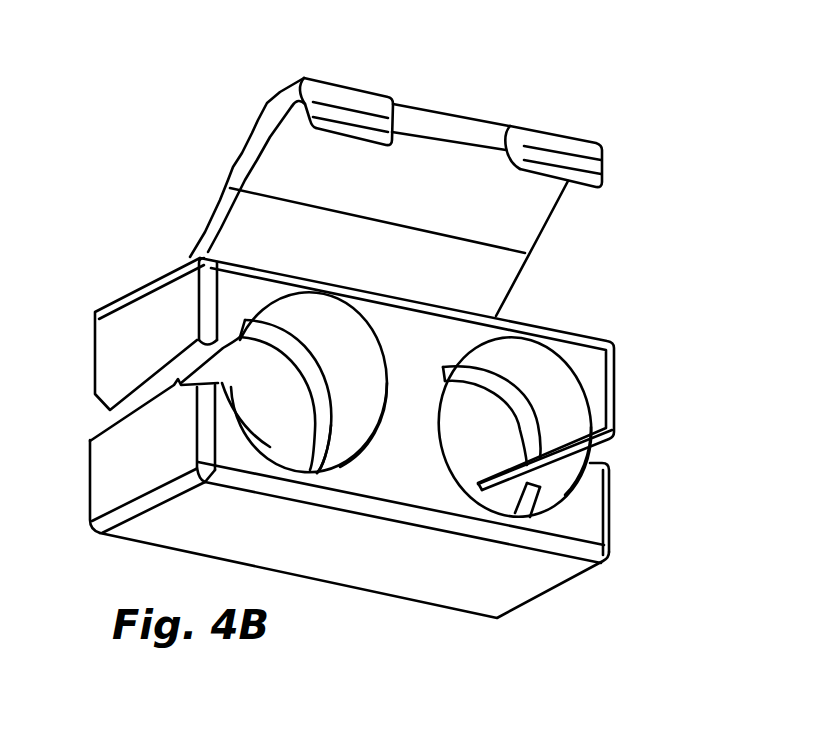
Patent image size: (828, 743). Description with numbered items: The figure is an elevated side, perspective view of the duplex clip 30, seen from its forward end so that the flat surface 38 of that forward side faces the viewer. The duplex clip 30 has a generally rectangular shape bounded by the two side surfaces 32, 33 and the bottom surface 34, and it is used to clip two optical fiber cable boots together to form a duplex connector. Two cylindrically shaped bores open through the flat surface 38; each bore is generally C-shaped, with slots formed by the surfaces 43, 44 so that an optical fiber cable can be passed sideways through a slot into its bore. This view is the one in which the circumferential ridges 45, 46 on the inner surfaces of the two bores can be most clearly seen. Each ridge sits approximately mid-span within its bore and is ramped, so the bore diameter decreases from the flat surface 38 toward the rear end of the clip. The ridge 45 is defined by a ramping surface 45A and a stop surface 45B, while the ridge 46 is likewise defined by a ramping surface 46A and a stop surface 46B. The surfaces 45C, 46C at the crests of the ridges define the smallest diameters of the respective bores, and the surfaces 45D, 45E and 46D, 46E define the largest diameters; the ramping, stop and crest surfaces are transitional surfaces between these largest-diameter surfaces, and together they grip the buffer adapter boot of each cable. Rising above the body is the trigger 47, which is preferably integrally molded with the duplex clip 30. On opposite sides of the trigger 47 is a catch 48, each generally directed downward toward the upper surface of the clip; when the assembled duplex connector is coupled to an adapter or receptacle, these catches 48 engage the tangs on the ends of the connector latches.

The duplex clip 30 is at (703, 265).
The side surface 32 is at (105, 490).
The side surface 33 is at (613, 525).
The bottom surface 34 is at (333, 567).
The flat surface of forward side 38 is at (423, 497).
The slot surface 43 is at (546, 485).
The slot surface 44 is at (107, 430).
The ridge 45 is at (307, 324).
The ramping surface 45A is at (307, 363).
The stop surface 45B is at (177, 381).
The smallest-diameter surface 45C is at (312, 447).
The largest-diameter surface 45D is at (358, 432).
The largest-diameter surface 45E is at (245, 350).
The ridge 46 is at (577, 419).
The ramping surface 46A is at (550, 398).
The stop surface 46B is at (522, 497).
The smallest-diameter surface 46C is at (542, 498).
The largest-diameter surface 46D is at (590, 410).
The largest-diameter surface 46E is at (448, 393).
The trigger 47 is at (468, 117).
The catch 48 is at (355, 97).